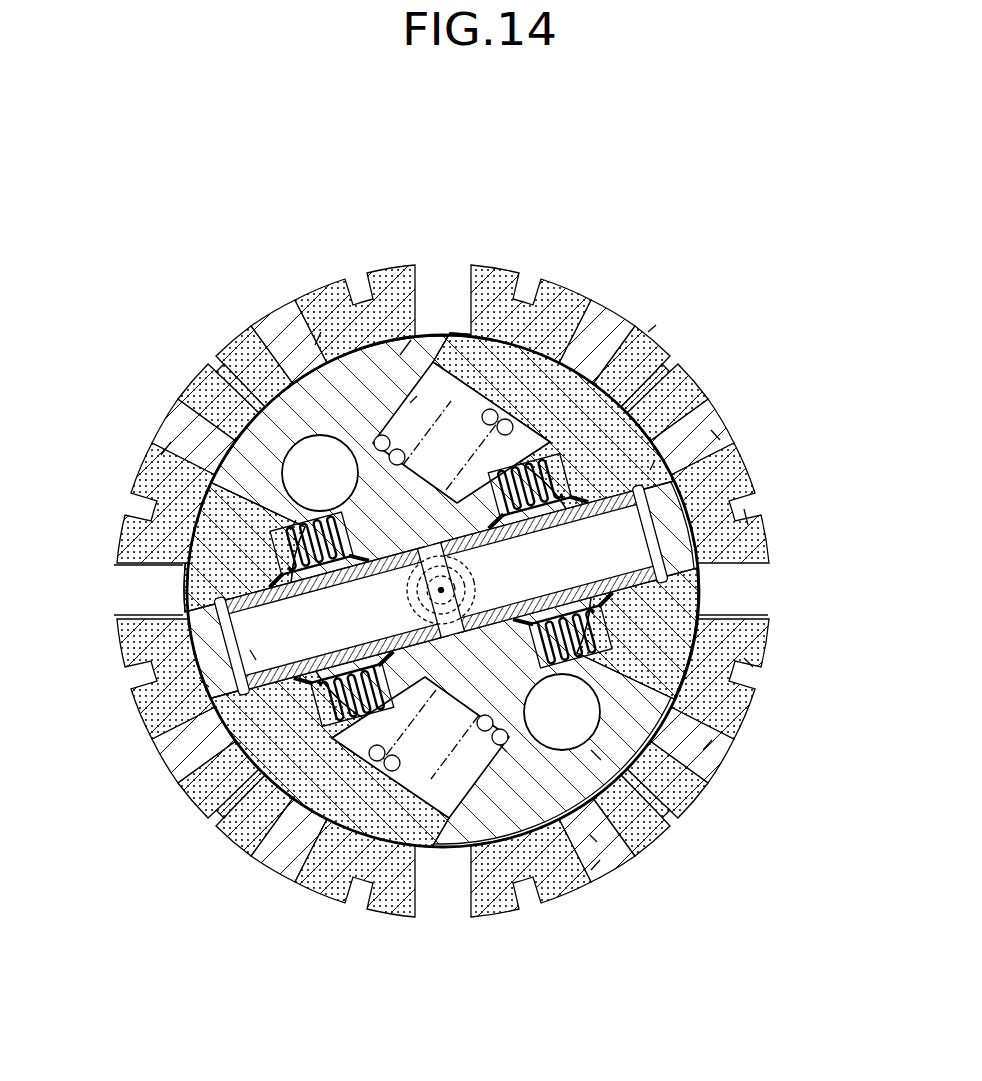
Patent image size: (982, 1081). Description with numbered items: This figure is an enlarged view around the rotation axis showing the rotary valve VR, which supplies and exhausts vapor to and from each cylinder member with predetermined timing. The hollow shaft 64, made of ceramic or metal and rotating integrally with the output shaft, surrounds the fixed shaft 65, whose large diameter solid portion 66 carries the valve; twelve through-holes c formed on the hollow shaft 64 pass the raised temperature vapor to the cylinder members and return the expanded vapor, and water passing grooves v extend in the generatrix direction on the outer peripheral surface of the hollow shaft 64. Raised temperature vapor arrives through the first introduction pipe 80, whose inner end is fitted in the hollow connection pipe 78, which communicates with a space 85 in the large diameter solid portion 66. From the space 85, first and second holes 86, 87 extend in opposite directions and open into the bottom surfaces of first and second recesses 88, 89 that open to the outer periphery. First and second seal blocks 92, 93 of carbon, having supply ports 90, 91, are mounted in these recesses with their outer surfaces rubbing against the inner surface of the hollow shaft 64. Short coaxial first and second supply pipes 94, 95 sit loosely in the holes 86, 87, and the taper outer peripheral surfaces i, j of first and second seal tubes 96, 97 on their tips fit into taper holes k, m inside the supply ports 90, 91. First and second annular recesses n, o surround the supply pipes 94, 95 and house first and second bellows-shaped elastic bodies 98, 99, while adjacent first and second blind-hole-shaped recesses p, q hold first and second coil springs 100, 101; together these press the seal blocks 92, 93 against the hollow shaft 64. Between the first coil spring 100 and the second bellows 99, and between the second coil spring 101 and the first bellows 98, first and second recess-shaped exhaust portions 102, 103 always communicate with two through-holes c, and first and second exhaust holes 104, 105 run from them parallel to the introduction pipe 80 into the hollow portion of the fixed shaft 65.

The hollow shaft 64 is at (443, 516).
The fixed shaft 65 is at (460, 341).
The large diameter solid portion 66 is at (341, 290).
The hollow connection pipe 78 is at (420, 747).
The first introduction pipe 80 is at (441, 590).
The space 85 is at (481, 590).
The first hole 86 is at (562, 712).
The second hole 87 is at (320, 473).
The first recess 88 is at (768, 609).
The second recess 89 is at (118, 580).
The supply port 90 is at (732, 591).
The supply port 91 is at (124, 629).
The first seal block 92 is at (677, 355).
The second seal block 93 is at (258, 847).
The first supply pipe 94 is at (790, 507).
The second supply pipe 95 is at (140, 711).
The first seal tube 96 is at (594, 660).
The second seal tube 97 is at (279, 531).
The first bellows-shaped elastic body 98 is at (551, 517).
The second bellows-shaped elastic body 99 is at (352, 665).
The first coil spring 100 is at (443, 332).
The second coil spring 101 is at (443, 880).
The first recess-shaped exhaust portion 102 is at (202, 369).
The second recess-shaped exhaust portion 103 is at (694, 817).
The first exhaust hole 104 is at (177, 591).
The second exhaust hole 105 is at (630, 877).
The rotary valve VR is at (702, 286).
The through-holes c is at (159, 270).
The taper outer peripheral surface i is at (672, 454).
The taper outer peripheral surface j is at (221, 705).
The taper hole k is at (557, 560).
The taper hole m is at (331, 619).
The first annular recess n is at (614, 737).
The second annular recess o is at (271, 492).
The first blind-hole-shaped recess p is at (377, 389).
The second blind-hole-shaped recess q is at (521, 776).
The water passing grooves v is at (781, 684).